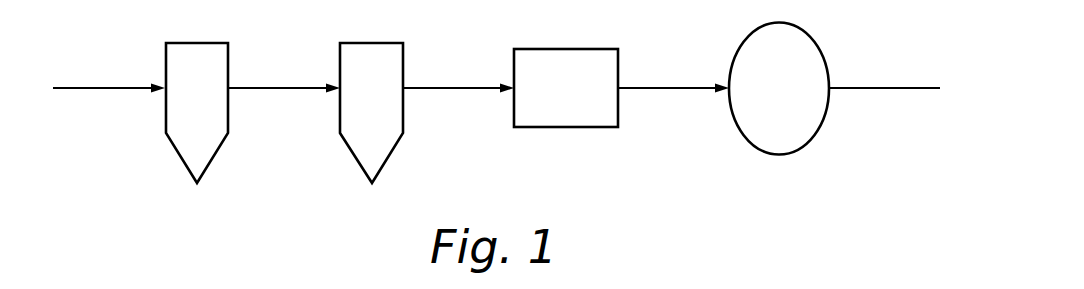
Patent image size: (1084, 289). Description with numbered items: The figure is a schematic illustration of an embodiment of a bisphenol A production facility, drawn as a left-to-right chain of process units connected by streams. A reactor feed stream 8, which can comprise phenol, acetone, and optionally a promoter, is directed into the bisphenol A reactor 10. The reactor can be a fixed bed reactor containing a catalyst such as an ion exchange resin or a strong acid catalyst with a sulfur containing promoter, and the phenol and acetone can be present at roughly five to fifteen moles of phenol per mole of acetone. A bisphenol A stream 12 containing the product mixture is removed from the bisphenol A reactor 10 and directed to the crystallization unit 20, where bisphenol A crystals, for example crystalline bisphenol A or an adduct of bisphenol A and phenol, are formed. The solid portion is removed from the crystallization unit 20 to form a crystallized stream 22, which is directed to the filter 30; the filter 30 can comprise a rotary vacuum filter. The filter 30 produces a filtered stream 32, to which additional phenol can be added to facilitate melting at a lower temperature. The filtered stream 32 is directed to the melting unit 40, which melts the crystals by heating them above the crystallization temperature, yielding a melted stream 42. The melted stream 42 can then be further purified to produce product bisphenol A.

The reactor feed stream 8 is at (100, 88).
The bisphenol A reactor 10 is at (182, 109).
The bisphenol A stream 12 is at (270, 88).
The crystallization unit 20 is at (356, 109).
The crystallized stream 22 is at (448, 88).
The filter 30 is at (550, 97).
The filtered stream 32 is at (667, 88).
The melting unit 40 is at (765, 97).
The melted stream 42 is at (882, 88).